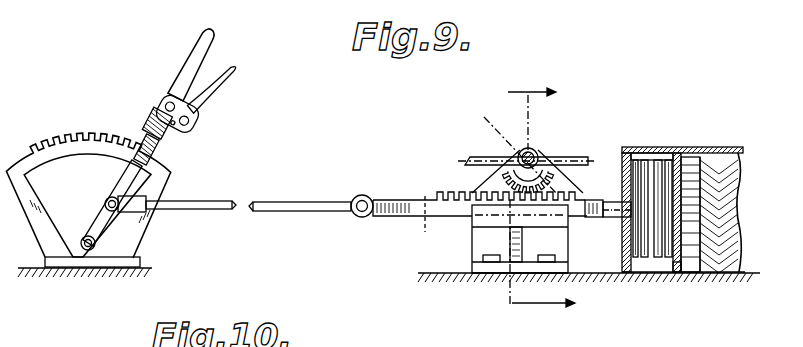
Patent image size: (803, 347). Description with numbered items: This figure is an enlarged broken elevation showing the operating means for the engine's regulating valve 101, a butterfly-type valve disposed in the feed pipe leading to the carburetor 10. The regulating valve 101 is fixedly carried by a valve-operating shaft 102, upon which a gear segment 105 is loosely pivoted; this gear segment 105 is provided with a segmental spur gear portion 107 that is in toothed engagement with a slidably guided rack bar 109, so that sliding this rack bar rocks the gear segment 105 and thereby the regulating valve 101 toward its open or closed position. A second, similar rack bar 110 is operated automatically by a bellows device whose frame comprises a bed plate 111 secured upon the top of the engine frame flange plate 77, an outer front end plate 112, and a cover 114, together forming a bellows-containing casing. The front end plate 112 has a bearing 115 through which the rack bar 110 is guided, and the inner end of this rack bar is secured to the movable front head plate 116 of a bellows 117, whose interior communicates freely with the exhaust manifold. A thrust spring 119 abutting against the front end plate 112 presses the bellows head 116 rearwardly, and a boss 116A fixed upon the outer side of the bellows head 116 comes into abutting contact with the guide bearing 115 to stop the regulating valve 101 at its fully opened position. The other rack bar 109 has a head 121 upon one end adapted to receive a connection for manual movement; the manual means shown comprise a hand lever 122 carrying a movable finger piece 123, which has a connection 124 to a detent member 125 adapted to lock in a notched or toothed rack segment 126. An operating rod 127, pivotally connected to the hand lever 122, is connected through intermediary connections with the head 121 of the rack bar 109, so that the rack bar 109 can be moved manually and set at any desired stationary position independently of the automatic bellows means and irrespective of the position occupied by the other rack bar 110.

The carburetor 10 is at (541, 201).
The flange plate 77 is at (682, 274).
The regulating valve 101 is at (496, 160).
The valve-operating shaft 102 is at (532, 151).
The gear segment 105 is at (482, 221).
The segmental spur gear portion 107 is at (508, 184).
The rack bar 109 is at (398, 198).
The rack bar 110 is at (472, 232).
The bed plate 111 is at (714, 273).
The front end plate 112 is at (623, 262).
The cover 114 is at (694, 149).
The bearing 115 is at (623, 200).
The movable front head plate 116 is at (678, 150).
The boss 116A is at (657, 273).
The bellows 117 is at (738, 158).
The thrust spring 119 is at (662, 138).
The head 121 is at (377, 231).
The hand lever 122 is at (208, 33).
The finger piece 123 is at (236, 78).
The connection 124 is at (195, 134).
The detent member 125 is at (160, 157).
The rack segment 126 is at (72, 147).
The operating rod 127 is at (291, 190).